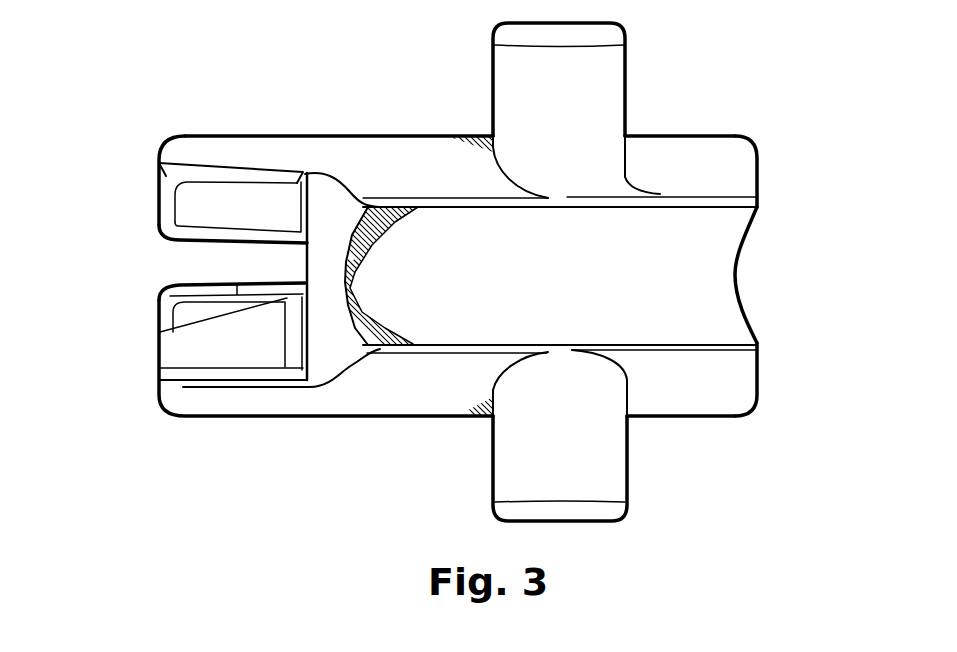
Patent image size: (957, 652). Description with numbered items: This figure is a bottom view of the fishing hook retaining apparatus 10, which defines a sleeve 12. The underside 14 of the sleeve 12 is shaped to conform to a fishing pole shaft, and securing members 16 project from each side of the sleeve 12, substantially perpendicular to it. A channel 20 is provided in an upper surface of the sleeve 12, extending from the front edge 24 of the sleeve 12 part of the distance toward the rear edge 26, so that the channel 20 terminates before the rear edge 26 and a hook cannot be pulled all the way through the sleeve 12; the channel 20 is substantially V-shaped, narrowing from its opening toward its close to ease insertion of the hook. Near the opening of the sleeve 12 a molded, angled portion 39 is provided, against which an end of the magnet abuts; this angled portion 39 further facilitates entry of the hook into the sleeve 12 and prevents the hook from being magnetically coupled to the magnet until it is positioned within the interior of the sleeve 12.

The fishing hook retaining apparatus 10 is at (330, 58).
The sleeve 12 is at (395, 136).
The underside 14 is at (700, 253).
The securing members 16 is at (612, 82).
The channel 20 is at (190, 262).
The front edge 24 is at (157, 158).
The rear edge 26 is at (758, 165).
The angled portion 39 is at (217, 335).